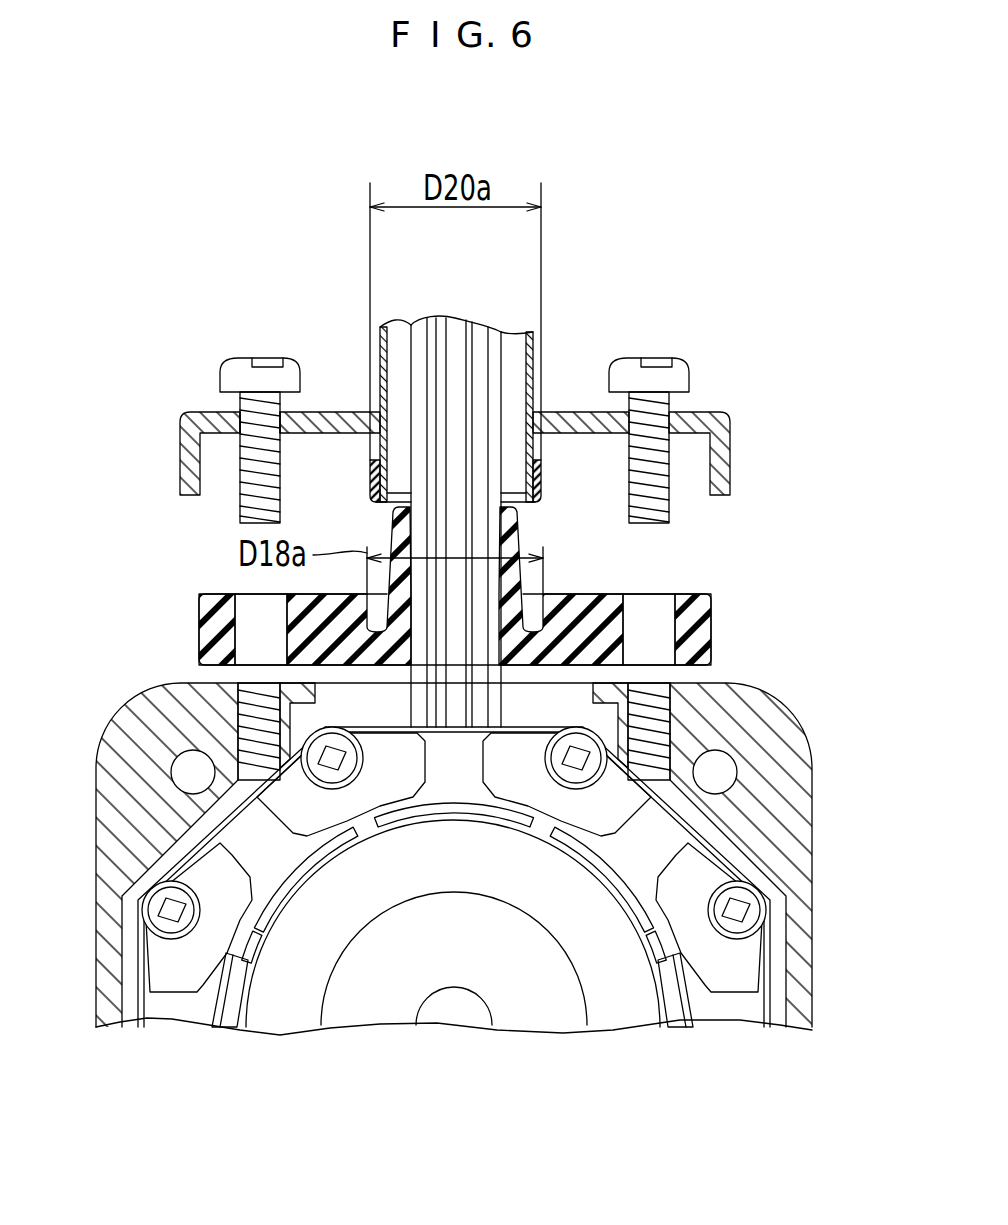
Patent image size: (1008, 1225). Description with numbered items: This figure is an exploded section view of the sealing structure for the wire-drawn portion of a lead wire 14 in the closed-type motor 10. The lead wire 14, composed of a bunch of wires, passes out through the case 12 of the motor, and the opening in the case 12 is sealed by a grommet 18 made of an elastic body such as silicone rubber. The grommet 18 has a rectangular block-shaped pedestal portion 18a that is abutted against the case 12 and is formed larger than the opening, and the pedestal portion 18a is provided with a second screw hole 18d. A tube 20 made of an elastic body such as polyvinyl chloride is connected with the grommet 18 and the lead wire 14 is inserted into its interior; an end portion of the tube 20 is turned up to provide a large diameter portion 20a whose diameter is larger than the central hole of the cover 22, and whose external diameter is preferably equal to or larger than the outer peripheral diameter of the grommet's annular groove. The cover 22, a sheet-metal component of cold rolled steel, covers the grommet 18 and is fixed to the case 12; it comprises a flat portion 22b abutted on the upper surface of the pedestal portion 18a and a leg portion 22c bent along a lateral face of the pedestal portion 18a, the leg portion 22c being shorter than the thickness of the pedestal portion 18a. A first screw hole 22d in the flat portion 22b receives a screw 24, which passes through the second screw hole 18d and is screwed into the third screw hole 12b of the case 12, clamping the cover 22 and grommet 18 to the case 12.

The closed-type motor 10 is at (776, 527).
The case 12 is at (462, 841).
The third screw hole 12b is at (250, 687).
The lead wire 14 is at (409, 356).
The grommet 18 is at (439, 586).
The pedestal portion 18a is at (689, 596).
The second screw hole 18d is at (257, 622).
The tube 20 is at (543, 504).
The large diameter portion 20a is at (539, 479).
The cover 22 is at (451, 385).
The flat portion 22b is at (563, 412).
The leg portion 22c is at (731, 455).
The first screw hole 22d is at (250, 412).
The screw 24 is at (237, 380).